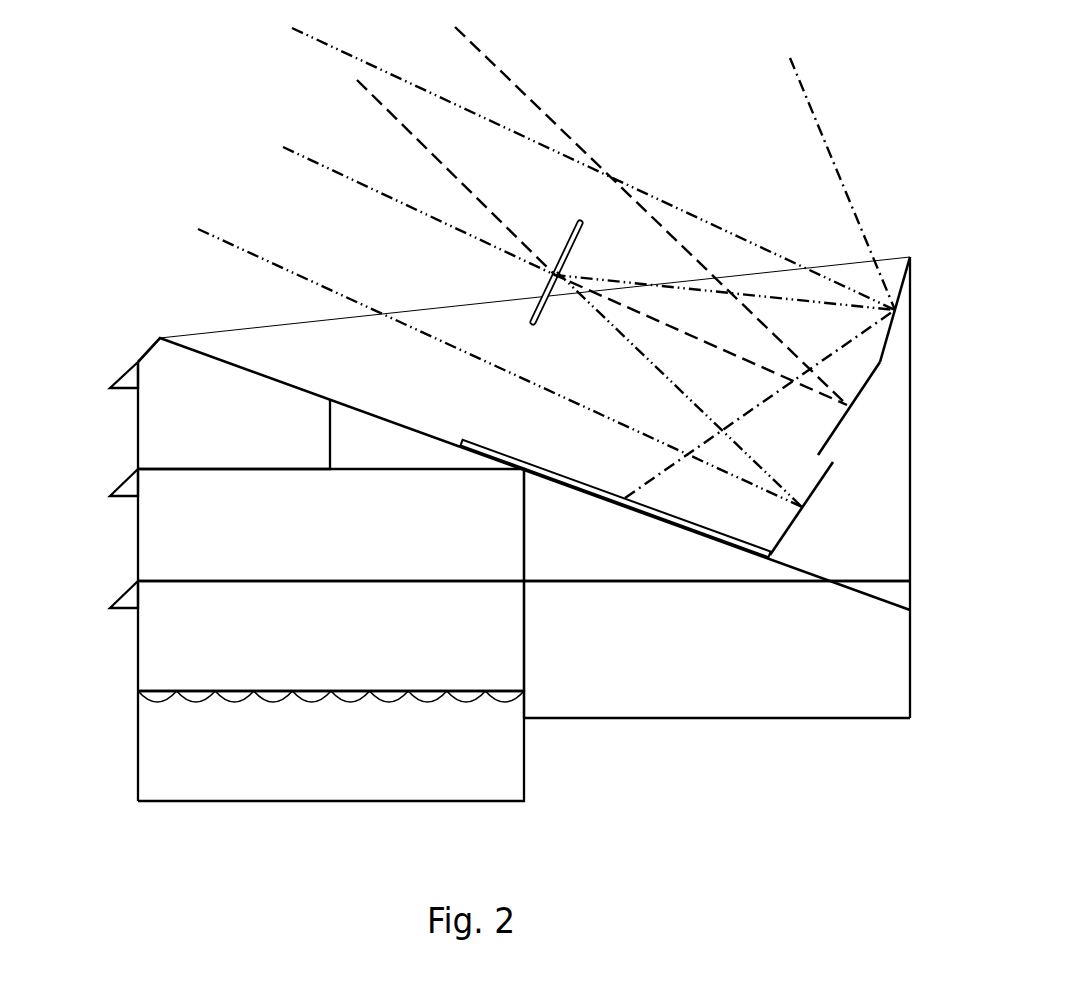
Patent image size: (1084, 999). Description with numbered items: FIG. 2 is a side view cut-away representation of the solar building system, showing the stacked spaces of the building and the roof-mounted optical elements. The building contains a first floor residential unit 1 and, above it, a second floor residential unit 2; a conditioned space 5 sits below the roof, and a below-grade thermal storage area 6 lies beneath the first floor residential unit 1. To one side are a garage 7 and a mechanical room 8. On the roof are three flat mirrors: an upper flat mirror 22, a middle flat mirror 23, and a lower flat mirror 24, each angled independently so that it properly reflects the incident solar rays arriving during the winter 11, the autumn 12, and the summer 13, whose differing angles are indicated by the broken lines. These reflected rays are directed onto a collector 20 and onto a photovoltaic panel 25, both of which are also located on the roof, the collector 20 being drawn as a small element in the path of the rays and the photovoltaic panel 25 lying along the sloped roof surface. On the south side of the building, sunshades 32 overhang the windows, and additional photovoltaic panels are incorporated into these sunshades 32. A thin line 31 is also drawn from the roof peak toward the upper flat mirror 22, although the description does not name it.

The first floor residential unit 1 is at (227, 608).
The second floor residential unit 2 is at (225, 497).
The conditioned space 5 is at (178, 401).
The below-grade thermal storage area 6 is at (227, 718).
The garage 7 is at (602, 625).
The mechanical room 8 is at (553, 528).
The winter incident rays 11 is at (335, 46).
The autumn incident rays 12 is at (553, 121).
The summer incident rays 13 is at (810, 106).
The collector 20 is at (581, 222).
The upper flat mirror 22 is at (895, 318).
The middle flat mirror 23 is at (848, 407).
The lower flat mirror 24 is at (804, 509).
The photovoltaic panel 25 is at (520, 465).
The reference line 31 is at (205, 333).
The sunshades 32 is at (137, 362).